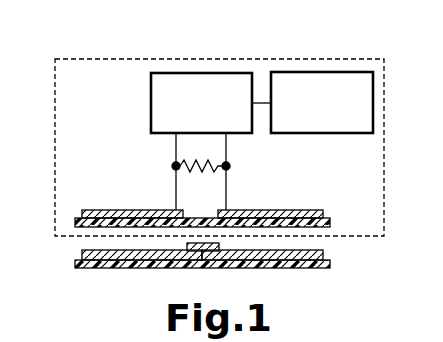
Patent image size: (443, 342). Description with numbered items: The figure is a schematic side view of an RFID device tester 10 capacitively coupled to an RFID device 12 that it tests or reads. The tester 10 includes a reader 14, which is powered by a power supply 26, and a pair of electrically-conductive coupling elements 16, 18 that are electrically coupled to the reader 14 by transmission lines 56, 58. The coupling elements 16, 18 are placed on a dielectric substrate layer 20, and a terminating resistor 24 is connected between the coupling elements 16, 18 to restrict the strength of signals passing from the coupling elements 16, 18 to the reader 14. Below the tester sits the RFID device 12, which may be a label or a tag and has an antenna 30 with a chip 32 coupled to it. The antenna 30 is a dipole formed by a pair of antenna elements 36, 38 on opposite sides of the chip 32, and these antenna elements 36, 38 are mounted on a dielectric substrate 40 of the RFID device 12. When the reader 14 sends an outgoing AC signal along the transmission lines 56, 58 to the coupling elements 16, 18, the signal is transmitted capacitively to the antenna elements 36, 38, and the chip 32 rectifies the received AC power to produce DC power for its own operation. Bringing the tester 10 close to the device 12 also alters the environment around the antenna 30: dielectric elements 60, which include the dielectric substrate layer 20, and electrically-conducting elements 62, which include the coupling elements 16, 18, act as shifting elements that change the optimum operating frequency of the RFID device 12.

The RFID device tester 10 is at (86, 58).
The RFID device 12 is at (46, 268).
The reader 14 is at (151, 107).
The coupling element 16 is at (108, 210).
The coupling element 18 is at (307, 210).
The dielectric substrate layer 20 is at (330, 222).
The terminating resistor 24 is at (222, 163).
The power supply 26 is at (373, 110).
The antenna 30 is at (196, 267).
The chip 32 is at (203, 252).
The antenna element 36 is at (127, 262).
The antenna element 38 is at (285, 262).
The dielectric substrate 40 is at (322, 267).
The transmission line 56 is at (176, 166).
The transmission line 58 is at (226, 196).
The dielectric elements 60 is at (213, 212).
The electrically-conducting elements 62 is at (346, 206).